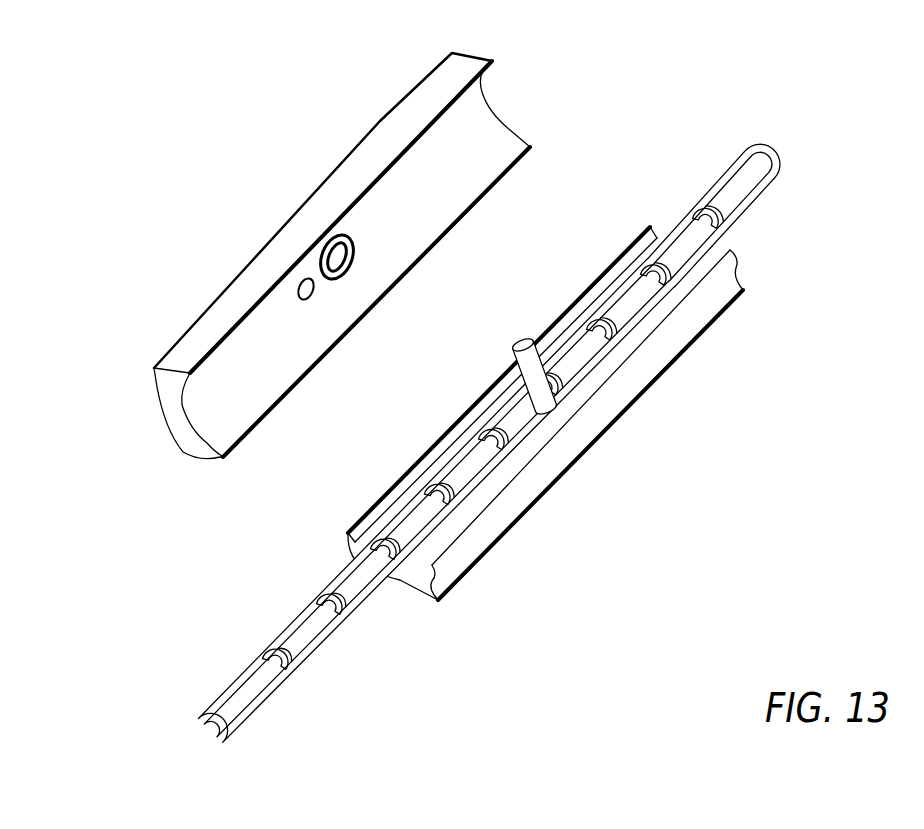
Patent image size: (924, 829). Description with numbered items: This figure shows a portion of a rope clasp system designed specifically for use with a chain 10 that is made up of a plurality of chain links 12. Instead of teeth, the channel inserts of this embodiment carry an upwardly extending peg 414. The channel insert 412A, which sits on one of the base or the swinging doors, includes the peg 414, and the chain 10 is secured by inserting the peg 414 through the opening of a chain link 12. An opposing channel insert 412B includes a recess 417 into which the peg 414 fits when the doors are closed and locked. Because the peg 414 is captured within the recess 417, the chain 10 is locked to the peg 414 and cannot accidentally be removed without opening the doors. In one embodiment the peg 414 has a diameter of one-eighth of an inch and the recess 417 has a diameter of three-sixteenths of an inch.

The chain 10 is at (492, 440).
The chain link 12 is at (541, 436).
The channel insert 412A is at (630, 380).
The opposing channel insert 412B is at (360, 174).
The peg 414 is at (520, 335).
The recess 417 is at (336, 242).